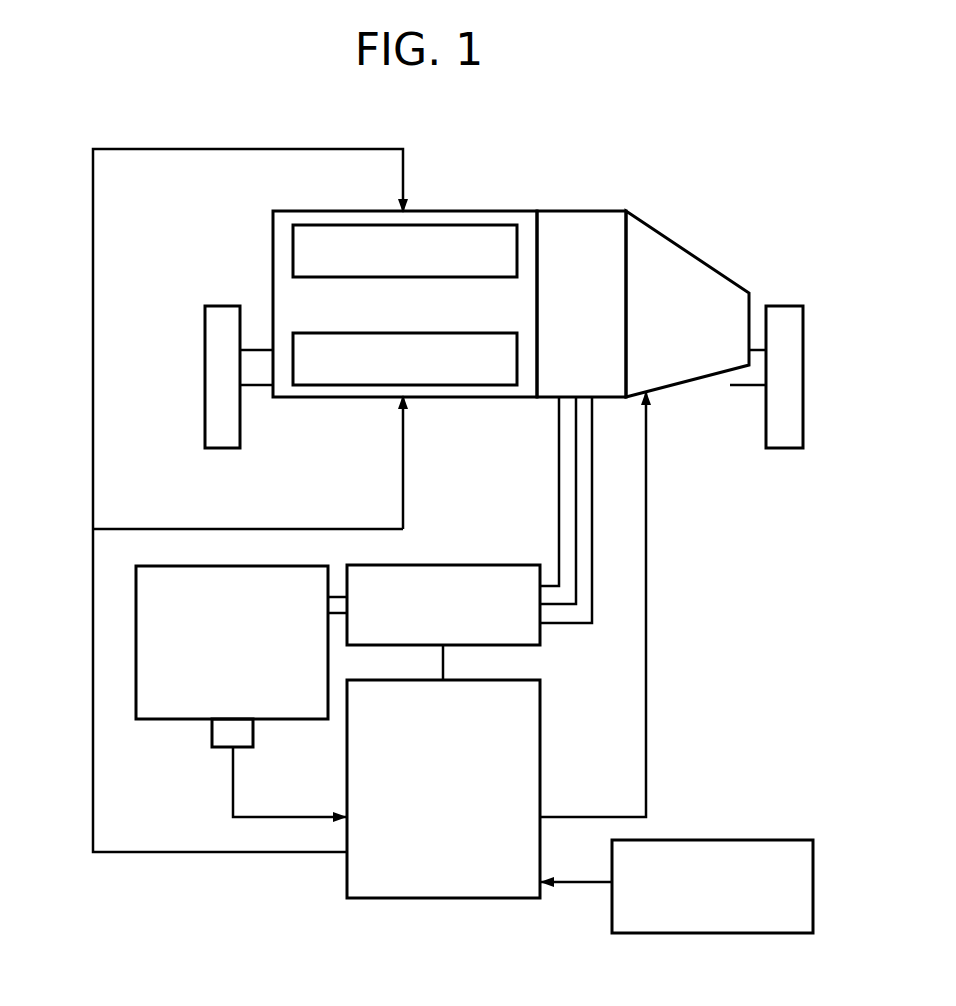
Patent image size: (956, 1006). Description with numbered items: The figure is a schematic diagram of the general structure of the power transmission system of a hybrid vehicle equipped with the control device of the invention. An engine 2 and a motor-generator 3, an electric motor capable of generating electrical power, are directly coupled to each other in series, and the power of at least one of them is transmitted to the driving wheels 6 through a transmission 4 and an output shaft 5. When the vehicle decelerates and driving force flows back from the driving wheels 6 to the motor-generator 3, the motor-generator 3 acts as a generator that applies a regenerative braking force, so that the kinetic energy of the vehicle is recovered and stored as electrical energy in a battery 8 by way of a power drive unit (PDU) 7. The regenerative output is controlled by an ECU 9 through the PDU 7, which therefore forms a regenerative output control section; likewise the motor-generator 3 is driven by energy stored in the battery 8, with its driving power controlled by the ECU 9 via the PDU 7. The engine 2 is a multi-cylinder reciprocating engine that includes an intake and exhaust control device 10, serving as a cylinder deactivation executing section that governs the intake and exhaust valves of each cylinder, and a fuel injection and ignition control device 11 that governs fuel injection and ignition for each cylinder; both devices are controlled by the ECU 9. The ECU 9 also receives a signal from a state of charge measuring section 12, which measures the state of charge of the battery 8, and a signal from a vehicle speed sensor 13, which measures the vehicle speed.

The engine 2 is at (503, 211).
The motor-generator 3 is at (578, 211).
The transmission 4 is at (678, 242).
The output shaft 5 is at (262, 385).
The driving wheels 6 is at (224, 306).
The power drive unit (PDU) 7 is at (491, 565).
The battery 8 is at (152, 719).
The ECU 9 is at (445, 898).
The intake and exhaust control device 10 is at (446, 225).
The fuel injection and ignition control device 11 is at (448, 397).
The state of charge measuring section 12 is at (224, 738).
The vehicle speed sensor 13 is at (769, 840).